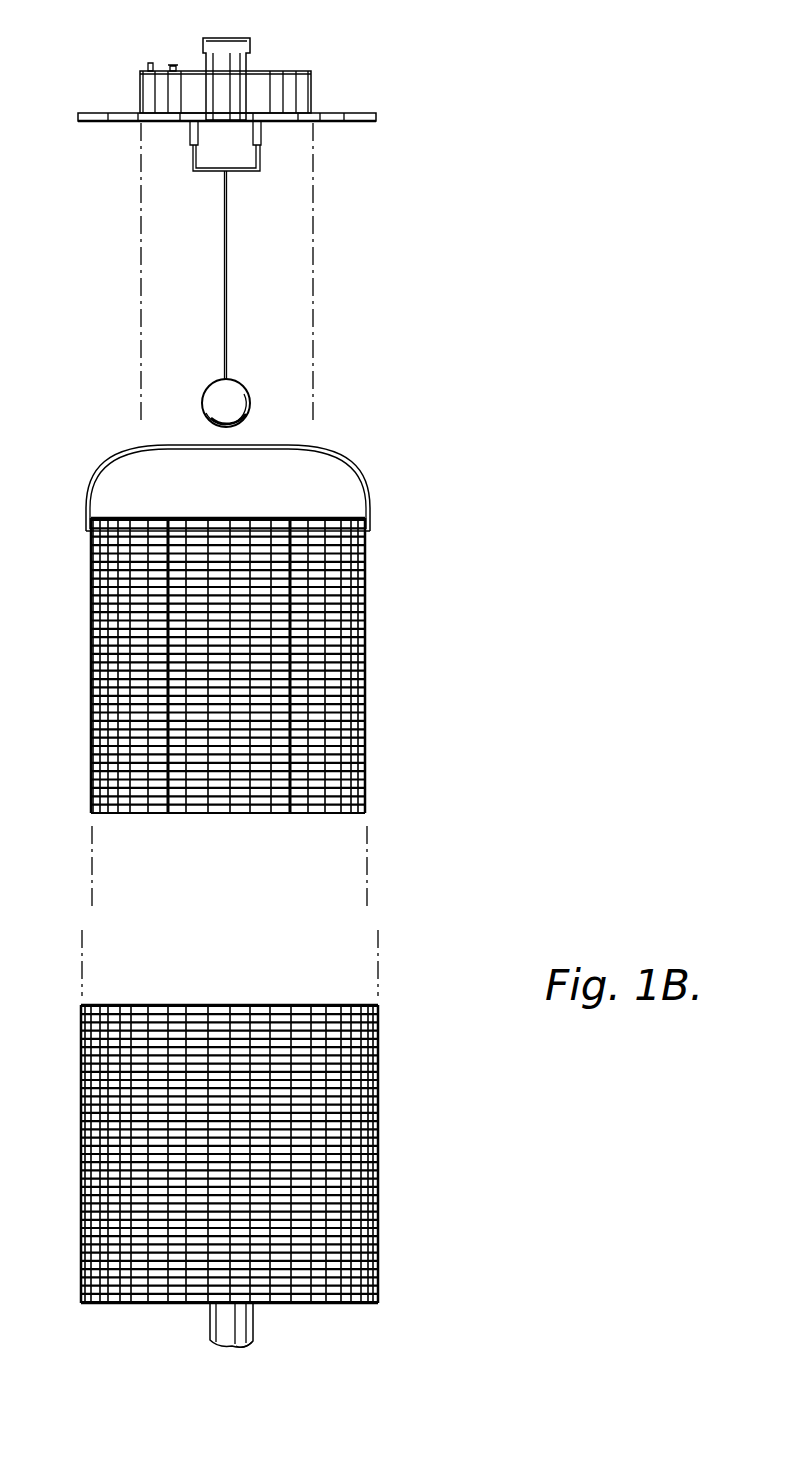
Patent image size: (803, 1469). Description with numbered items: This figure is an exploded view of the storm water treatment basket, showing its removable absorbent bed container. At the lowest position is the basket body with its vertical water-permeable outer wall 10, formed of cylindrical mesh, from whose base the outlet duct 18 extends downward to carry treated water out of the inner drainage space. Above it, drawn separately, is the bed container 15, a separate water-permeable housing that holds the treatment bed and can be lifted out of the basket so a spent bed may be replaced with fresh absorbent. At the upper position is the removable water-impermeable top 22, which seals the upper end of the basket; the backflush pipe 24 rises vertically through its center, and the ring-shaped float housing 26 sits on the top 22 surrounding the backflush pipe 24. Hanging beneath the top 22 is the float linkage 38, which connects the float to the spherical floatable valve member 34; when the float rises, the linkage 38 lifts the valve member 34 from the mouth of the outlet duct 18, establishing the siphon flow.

The outer wall 10 is at (371, 1147).
The bed container 15 is at (362, 645).
The outlet duct 18 is at (248, 1304).
The top 22 is at (364, 105).
The backflush pipe 24 is at (243, 36).
The float housing 26 is at (306, 90).
The valve member 34 is at (240, 380).
The float linkage 38 is at (220, 305).